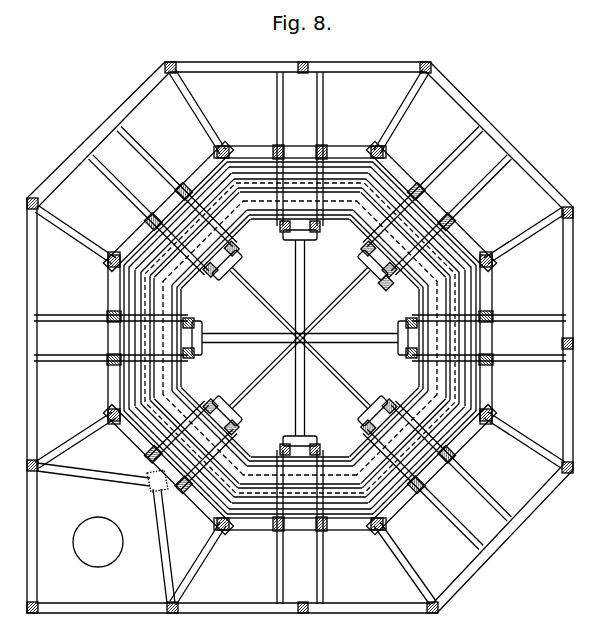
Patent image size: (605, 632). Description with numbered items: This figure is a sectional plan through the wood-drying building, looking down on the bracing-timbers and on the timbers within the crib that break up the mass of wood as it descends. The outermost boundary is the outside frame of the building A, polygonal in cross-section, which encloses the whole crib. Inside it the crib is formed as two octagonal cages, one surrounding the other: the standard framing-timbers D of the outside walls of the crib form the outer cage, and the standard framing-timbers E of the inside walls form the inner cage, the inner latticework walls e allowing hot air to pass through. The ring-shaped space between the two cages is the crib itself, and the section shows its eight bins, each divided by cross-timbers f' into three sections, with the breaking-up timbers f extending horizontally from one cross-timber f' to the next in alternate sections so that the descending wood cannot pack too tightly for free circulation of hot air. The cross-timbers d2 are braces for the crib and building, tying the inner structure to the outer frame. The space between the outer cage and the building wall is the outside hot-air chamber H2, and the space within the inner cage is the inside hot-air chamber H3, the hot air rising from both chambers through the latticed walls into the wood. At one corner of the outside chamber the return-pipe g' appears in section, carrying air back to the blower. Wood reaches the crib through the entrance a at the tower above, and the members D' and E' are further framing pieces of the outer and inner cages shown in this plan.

The outside frame of the building A is at (291, 337).
The inner ring beam D' is at (432, 207).
The standard framing-timbers of the outside walls of the crib D is at (101, 338).
The entrance a is at (120, 330).
The cross-timbers d2 is at (145, 192).
The cross-timbers f' is at (405, 212).
The breaking-up timbers f is at (405, 446).
The bracket E' is at (292, 246).
The standard framing-timbers of the inside walls of the crib E is at (362, 265).
The inside walls e is at (386, 289).
The outside hot-air chamber H2 is at (294, 334).
The inside hot-air chamber H3 is at (340, 373).
The return-pipe g' is at (98, 542).